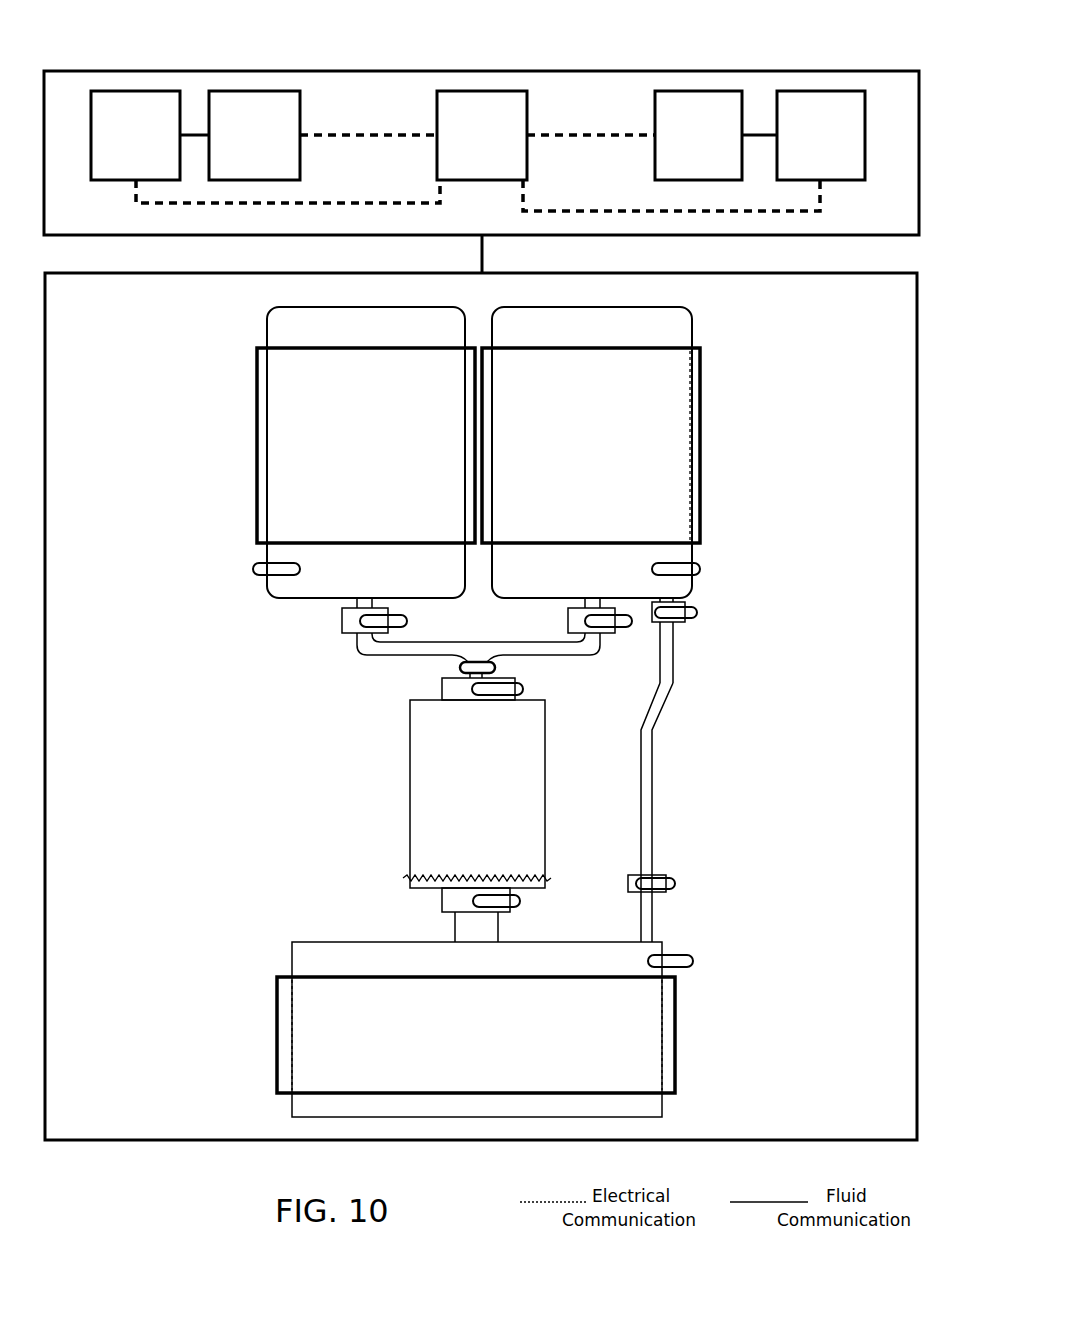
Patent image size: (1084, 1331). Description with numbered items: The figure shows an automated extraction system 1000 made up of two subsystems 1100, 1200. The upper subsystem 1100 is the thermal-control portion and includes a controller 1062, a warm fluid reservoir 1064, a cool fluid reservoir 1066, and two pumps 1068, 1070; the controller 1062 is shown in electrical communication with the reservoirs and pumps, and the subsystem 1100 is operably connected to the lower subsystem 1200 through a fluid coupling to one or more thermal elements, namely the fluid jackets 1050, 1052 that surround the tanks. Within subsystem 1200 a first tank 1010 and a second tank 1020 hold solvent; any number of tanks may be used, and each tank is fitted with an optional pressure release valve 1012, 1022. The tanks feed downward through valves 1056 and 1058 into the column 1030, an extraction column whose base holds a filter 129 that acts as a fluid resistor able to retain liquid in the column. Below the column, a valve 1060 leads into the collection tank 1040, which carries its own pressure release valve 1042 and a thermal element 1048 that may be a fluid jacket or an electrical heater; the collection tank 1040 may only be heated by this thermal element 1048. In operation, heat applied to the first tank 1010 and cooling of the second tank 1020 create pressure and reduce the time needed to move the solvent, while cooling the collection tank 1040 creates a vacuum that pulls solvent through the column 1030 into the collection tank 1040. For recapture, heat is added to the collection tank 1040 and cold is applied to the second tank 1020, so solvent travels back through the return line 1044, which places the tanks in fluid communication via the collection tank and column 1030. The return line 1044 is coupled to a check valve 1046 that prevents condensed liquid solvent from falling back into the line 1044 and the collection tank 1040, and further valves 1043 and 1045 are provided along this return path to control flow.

The extraction system 1000 is at (843, 52).
The subsystem 1100 is at (910, 218).
The subsystem 1200 is at (890, 1117).
The pump 1068 is at (135, 135).
The warm fluid reservoir 1064 is at (254, 135).
The controller 1062 is at (482, 135).
The cool fluid reservoir 1066 is at (698, 135).
The pump 1070 is at (821, 135).
The first tank 1010 is at (268, 309).
The second tank 1020 is at (681, 307).
The fluid jacket 1050 is at (257, 424).
The fluid jacket 1052 is at (700, 424).
The pressure release valve 1012 is at (254, 569).
The pressure release valve 1022 is at (700, 569).
The valve 1056 is at (342, 630).
The valve 1058 is at (442, 682).
The column 1030 is at (551, 795).
The filter 129 is at (545, 878).
The valve 1060 is at (442, 900).
The check valve 1046 is at (688, 600).
The valve 1045 is at (682, 622).
The return line 1044 is at (652, 785).
The valve 1043 is at (666, 875).
The pressure release valve 1042 is at (693, 960).
The collection tank 1040 is at (292, 950).
The thermal element 1048 is at (277, 1072).